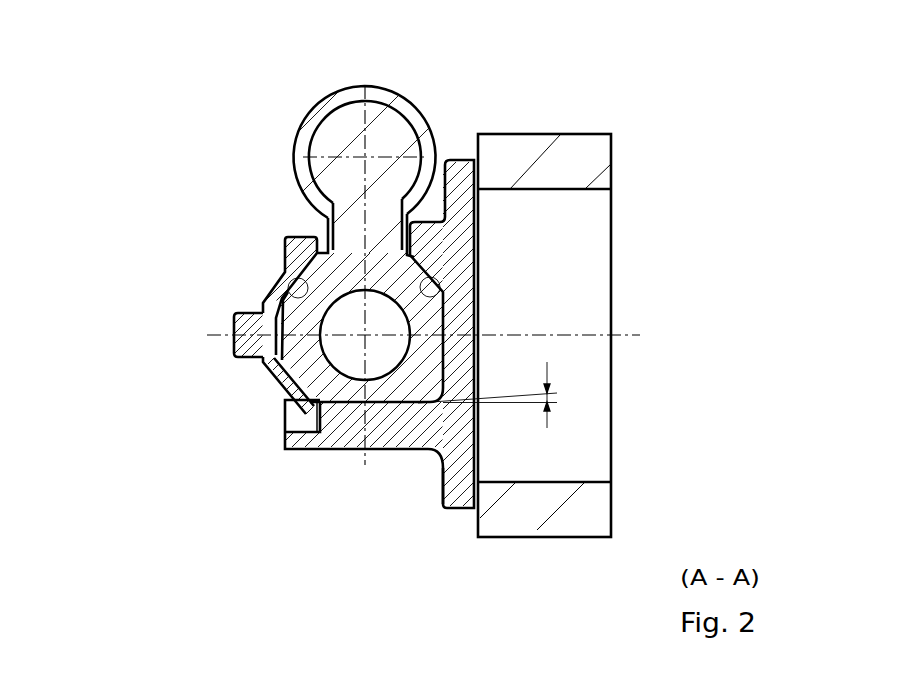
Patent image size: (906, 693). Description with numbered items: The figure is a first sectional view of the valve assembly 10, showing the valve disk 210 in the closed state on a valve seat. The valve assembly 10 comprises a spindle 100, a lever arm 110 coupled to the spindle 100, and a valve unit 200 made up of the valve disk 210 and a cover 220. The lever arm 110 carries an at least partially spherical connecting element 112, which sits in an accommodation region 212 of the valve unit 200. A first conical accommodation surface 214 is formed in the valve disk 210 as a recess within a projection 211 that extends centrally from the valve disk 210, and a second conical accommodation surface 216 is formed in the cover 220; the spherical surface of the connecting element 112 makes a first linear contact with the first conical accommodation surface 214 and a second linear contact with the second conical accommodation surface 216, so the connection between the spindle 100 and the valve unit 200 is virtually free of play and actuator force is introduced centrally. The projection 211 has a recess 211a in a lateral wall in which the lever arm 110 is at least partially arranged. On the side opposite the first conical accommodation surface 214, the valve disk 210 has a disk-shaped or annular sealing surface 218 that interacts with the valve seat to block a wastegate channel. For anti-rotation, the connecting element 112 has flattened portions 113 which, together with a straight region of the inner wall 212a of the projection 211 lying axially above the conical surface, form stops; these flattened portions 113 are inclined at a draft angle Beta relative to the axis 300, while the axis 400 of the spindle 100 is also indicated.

The valve assembly 10 is at (697, 182).
The spindle 100 is at (293, 138).
The lever arm 110 is at (327, 226).
The connecting element 112 is at (280, 372).
The flattened portion 113 is at (330, 437).
The valve unit 200 is at (263, 468).
The valve disk 210 is at (455, 510).
The projection 211 is at (362, 452).
The recess 211a is at (404, 220).
The accommodation region 212 is at (268, 364).
The inner wall 212a is at (417, 400).
The first conical accommodation surface 214 is at (440, 290).
The second conical accommodation surface 216 is at (300, 292).
The sealing surface 218 is at (480, 497).
The cover 220 is at (233, 325).
The axis 300 is at (220, 338).
The axis of spindle 400 is at (343, 138).
The angle beta Beta is at (548, 371).